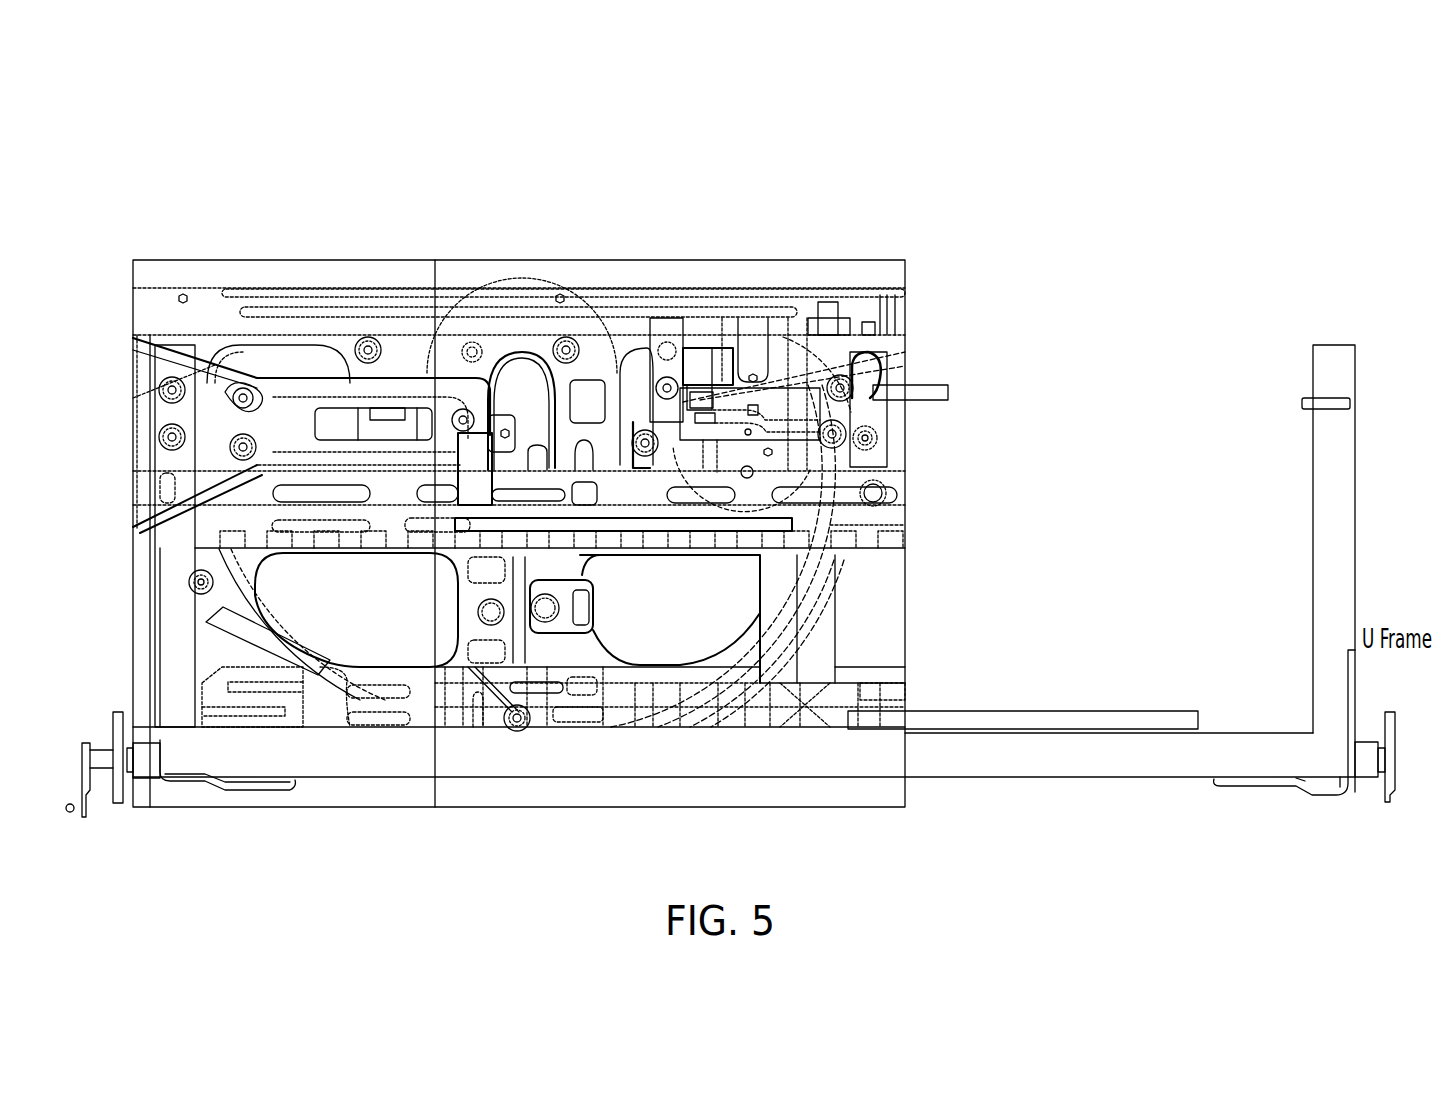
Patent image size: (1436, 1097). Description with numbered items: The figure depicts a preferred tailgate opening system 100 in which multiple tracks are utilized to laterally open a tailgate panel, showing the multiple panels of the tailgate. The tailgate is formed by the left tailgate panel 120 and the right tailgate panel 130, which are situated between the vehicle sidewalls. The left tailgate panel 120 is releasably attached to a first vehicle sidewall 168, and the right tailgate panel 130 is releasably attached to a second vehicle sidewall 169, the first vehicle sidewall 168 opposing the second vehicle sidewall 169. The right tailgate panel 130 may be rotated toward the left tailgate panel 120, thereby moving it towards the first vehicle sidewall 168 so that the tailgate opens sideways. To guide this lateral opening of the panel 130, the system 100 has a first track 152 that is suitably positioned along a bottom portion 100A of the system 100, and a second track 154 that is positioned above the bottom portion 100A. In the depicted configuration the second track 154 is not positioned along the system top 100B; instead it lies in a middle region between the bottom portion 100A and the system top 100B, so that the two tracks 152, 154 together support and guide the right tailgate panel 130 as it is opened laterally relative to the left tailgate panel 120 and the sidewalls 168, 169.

The system 100 is at (190, 173).
The bottom portion 100A is at (1010, 782).
The system top 100B is at (467, 270).
The left tailgate panel 120 is at (325, 688).
The right tailgate panel 130 is at (640, 668).
The first track 152 is at (1015, 714).
The second track 154 is at (915, 513).
The first vehicle sidewall 168 is at (153, 315).
The second vehicle sidewall 169 is at (1357, 399).